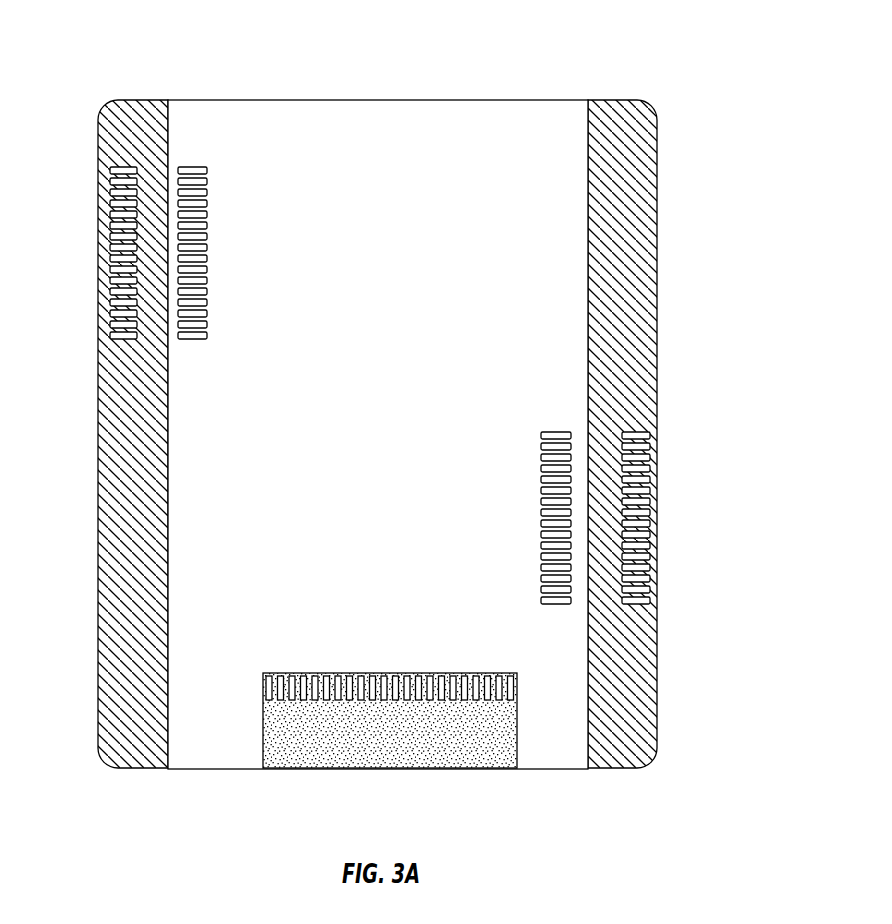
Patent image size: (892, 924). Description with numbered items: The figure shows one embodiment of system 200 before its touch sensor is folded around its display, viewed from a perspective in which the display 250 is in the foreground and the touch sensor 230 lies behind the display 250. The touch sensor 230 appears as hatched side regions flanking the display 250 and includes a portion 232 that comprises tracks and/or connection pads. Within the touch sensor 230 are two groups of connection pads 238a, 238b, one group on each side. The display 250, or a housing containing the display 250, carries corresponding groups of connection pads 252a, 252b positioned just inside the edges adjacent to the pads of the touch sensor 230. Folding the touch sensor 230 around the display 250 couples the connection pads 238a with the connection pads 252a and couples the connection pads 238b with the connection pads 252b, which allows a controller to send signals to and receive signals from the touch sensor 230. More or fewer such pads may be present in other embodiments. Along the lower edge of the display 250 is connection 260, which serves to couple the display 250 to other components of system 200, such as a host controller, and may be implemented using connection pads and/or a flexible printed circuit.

The system 200 is at (674, 62).
The touch sensor 230 is at (657, 182).
The portion comprising tracks and/or connection pads 232 is at (643, 290).
The connection pads 238a is at (108, 283).
The connection pads 238b is at (651, 533).
The display 250 is at (553, 752).
The connection pads 252a is at (190, 340).
The connection pads 252b is at (555, 605).
The connection 260 is at (420, 742).